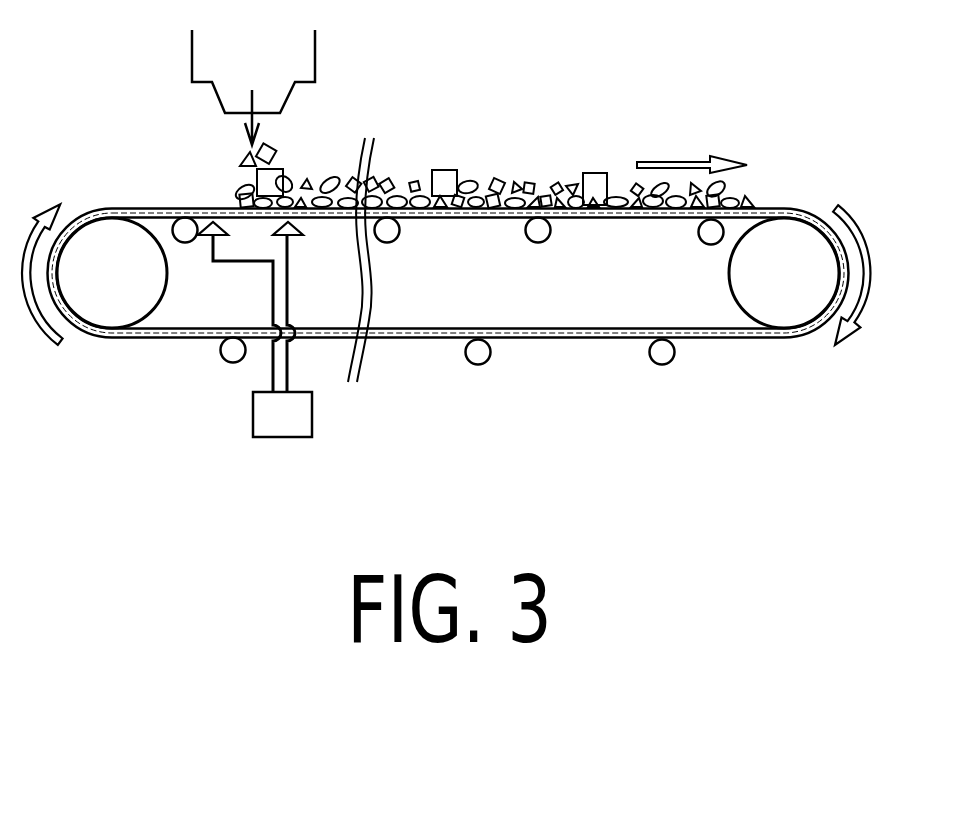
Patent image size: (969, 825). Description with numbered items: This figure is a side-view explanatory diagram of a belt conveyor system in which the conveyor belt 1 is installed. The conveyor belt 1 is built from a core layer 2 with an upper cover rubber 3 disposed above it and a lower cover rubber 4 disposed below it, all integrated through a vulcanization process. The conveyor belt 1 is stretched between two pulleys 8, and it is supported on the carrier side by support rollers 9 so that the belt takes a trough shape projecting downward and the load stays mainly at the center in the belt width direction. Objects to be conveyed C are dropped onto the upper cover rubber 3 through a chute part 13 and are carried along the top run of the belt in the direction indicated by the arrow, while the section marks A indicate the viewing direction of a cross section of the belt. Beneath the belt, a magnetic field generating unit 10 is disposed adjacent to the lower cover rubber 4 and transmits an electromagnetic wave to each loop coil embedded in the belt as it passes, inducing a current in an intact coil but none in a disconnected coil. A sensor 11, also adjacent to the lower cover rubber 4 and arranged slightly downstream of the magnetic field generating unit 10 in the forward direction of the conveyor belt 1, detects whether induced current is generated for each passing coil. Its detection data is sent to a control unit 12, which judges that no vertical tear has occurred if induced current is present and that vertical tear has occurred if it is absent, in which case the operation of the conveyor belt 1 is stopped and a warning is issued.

The conveyor belt 1 is at (765, 208).
The core layer 2 is at (475, 218).
The upper cover rubber 3 is at (193, 208).
The lower cover rubber 4 is at (530, 333).
The pulley 8 is at (107, 316).
The support roller 9 is at (387, 243).
The magnetic field generating unit 10 is at (203, 237).
The sensor 11 is at (298, 238).
The control unit 12 is at (288, 432).
The chute part 13 is at (307, 66).
The objects to be conveyed C is at (278, 155).
The section view direction A is at (563, 113).